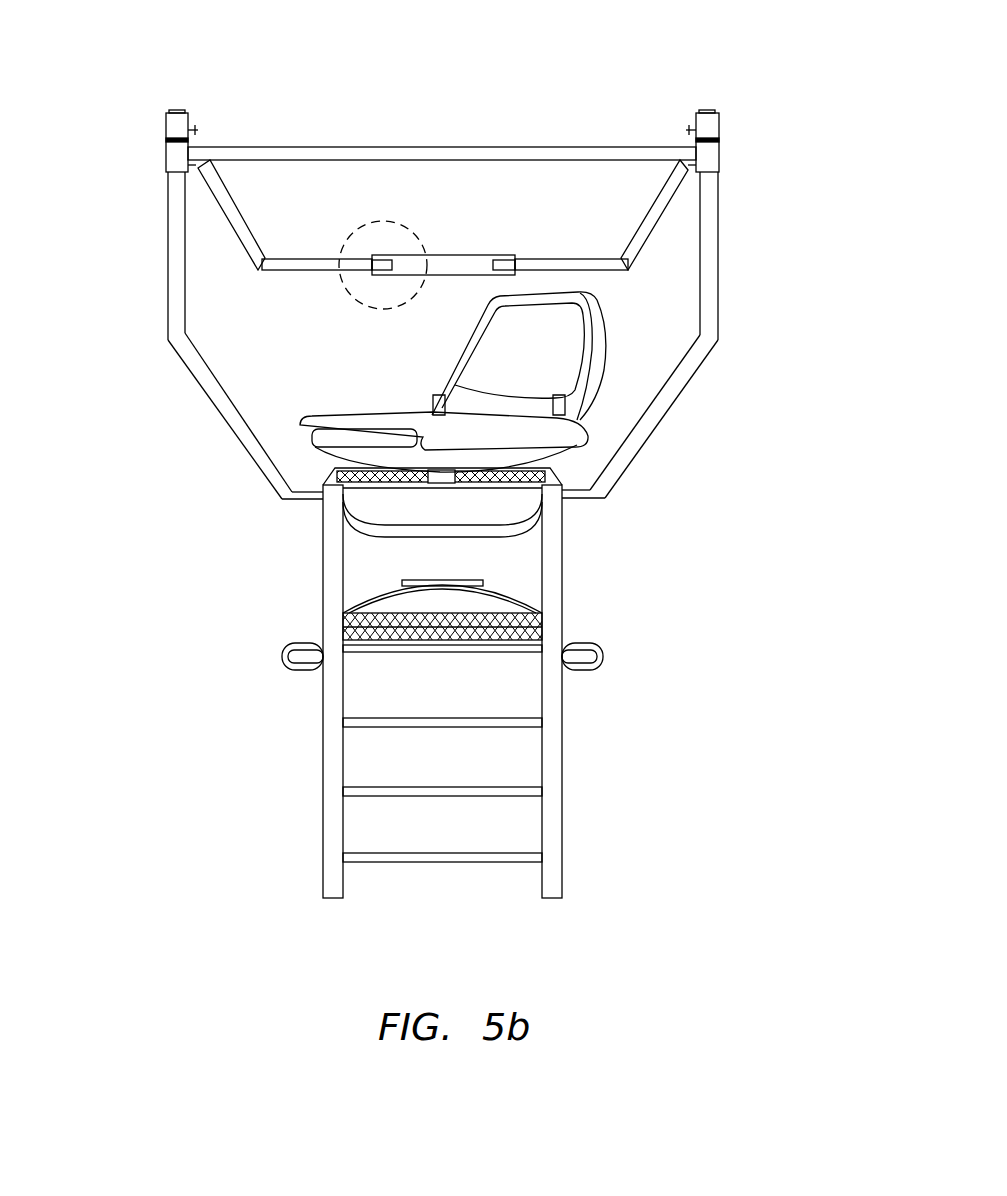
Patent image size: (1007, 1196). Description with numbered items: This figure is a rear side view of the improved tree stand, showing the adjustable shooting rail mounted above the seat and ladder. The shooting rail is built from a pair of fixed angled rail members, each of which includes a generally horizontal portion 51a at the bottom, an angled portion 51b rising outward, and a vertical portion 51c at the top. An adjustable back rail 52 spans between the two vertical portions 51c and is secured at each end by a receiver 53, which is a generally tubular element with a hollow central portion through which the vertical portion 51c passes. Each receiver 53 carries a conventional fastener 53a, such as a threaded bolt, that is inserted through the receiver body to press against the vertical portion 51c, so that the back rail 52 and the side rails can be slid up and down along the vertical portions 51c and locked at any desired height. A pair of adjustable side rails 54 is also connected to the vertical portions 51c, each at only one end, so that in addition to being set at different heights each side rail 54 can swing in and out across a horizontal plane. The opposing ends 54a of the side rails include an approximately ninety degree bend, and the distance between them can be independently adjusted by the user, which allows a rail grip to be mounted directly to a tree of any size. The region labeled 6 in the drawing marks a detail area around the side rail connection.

The connector bracket assembly 6 is at (383, 221).
The horizontal portion 51a is at (297, 500).
The angled portion 51b is at (205, 378).
The vertical portion 51c is at (173, 270).
The adjustable back rail 52 is at (278, 154).
The receiver 53 is at (167, 118).
The fastener 53a is at (694, 131).
The adjustable side rail 54 is at (656, 203).
The opposing end 54a is at (298, 272).